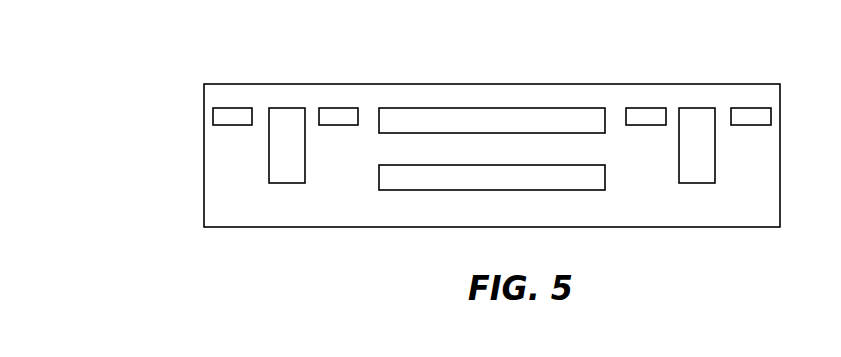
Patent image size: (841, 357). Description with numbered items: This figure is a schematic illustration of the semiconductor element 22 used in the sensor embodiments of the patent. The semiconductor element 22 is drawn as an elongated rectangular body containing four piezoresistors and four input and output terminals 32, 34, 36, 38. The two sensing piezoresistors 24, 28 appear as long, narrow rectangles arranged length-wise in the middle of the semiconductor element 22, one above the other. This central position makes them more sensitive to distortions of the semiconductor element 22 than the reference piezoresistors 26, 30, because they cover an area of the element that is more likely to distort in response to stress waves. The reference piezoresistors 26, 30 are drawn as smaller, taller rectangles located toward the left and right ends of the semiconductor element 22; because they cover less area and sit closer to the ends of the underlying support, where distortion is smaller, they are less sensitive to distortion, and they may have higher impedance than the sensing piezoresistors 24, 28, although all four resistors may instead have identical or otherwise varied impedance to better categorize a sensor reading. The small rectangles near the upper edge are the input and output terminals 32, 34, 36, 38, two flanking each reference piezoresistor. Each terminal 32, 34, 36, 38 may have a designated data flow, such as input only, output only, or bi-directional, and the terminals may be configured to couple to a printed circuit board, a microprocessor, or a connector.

The semiconductor element 22 is at (147, 115).
The sensing piezoresistor 24 is at (413, 112).
The reference piezoresistor 26 is at (285, 112).
The sensing piezoresistor 28 is at (414, 187).
The reference piezoresistor 30 is at (698, 112).
The input and output terminal 32 is at (223, 112).
The input and output terminal 34 is at (345, 112).
The input and output terminal 36 is at (630, 112).
The input and output terminal 38 is at (763, 112).